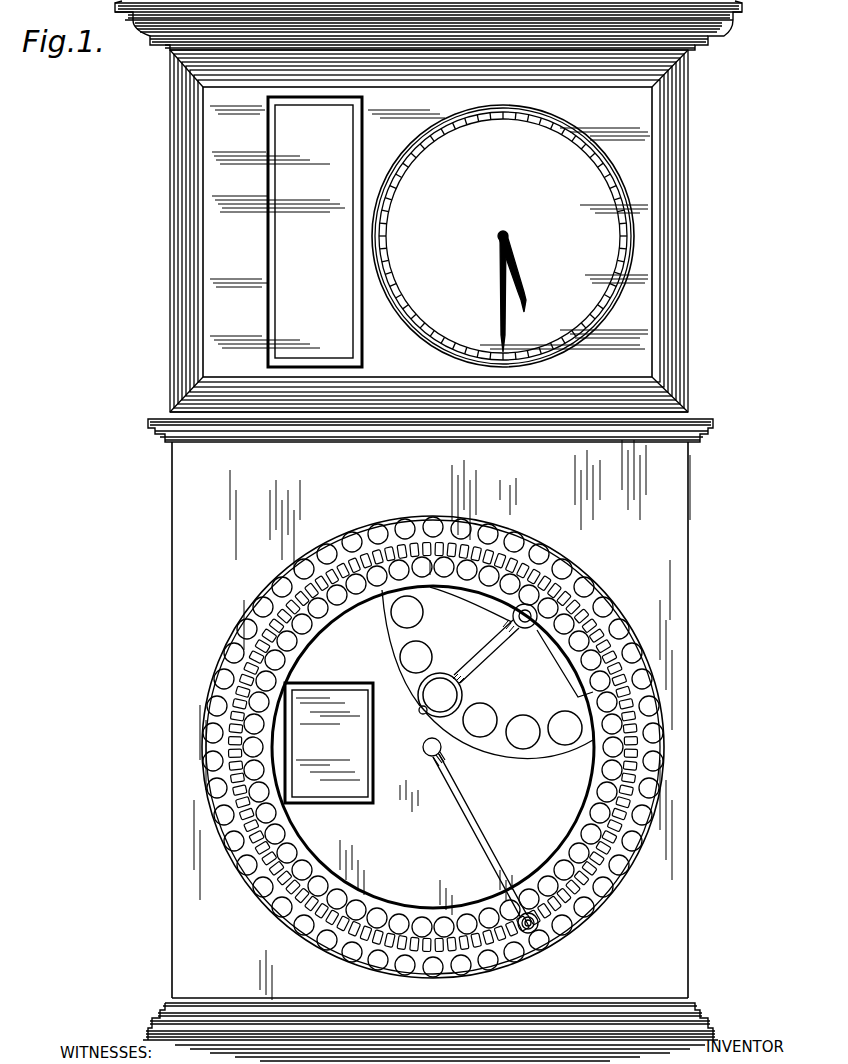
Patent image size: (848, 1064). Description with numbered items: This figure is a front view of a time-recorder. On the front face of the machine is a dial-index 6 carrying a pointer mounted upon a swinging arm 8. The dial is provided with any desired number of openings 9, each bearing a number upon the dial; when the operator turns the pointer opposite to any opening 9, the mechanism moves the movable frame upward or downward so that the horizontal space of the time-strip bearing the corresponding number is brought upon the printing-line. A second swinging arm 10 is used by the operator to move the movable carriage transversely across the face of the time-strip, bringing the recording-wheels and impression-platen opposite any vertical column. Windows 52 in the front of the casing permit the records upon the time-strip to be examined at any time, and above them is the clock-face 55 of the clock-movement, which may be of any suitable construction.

The dial-index 6 is at (370, 525).
The swinging arm 8 is at (485, 827).
The openings 9 is at (585, 900).
The swinging arm 10 is at (513, 619).
The windows 52 is at (320, 450).
The clock-face 55 is at (503, 236).